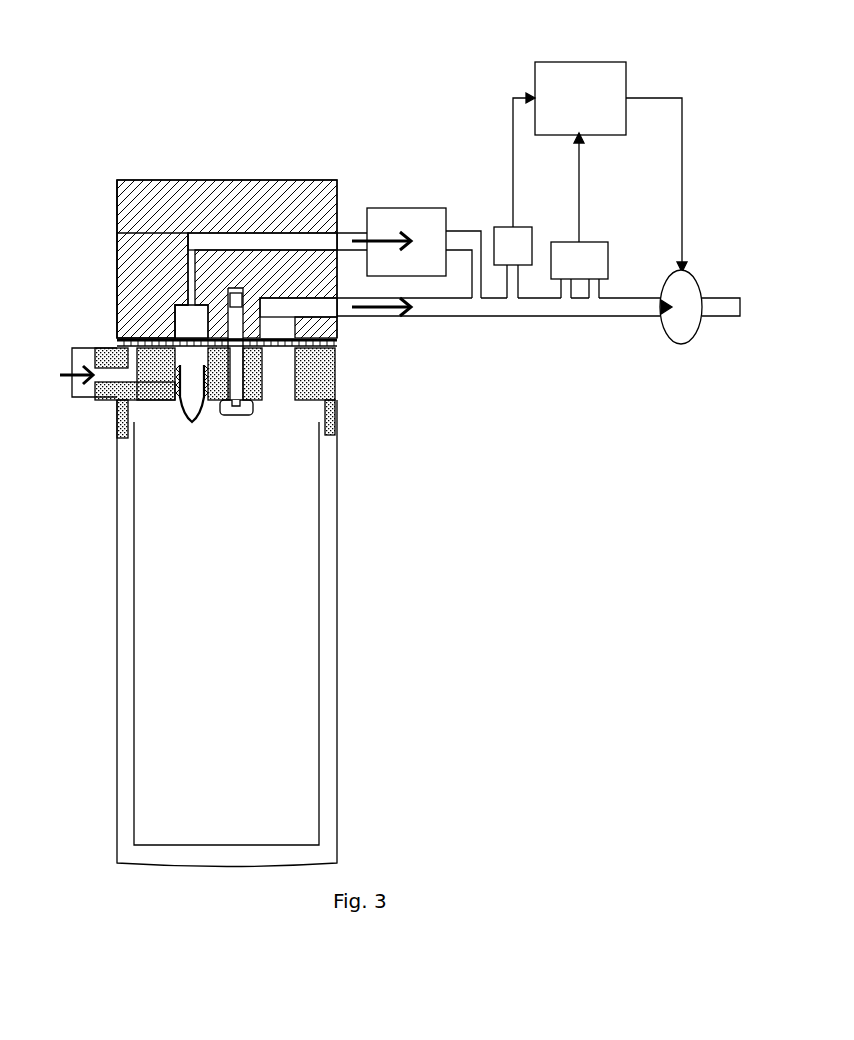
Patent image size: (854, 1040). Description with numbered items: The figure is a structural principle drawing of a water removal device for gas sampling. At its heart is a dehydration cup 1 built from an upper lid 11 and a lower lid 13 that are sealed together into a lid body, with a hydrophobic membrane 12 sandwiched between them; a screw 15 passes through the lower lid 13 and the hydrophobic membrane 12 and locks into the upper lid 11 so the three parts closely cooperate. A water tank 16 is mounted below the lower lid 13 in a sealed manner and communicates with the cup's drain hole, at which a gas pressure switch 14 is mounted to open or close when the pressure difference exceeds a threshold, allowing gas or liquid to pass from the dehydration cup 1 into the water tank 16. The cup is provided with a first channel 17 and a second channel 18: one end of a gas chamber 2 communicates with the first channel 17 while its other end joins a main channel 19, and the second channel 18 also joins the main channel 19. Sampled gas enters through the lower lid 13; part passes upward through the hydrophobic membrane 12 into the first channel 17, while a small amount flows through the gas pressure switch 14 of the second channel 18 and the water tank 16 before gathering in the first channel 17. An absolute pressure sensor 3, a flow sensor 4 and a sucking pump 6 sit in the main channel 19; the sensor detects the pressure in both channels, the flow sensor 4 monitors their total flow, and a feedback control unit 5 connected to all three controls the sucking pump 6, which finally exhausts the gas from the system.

The dehydration cup 1 is at (203, 285).
The gas chamber 2 is at (412, 228).
The absolute pressure sensor 3 is at (513, 247).
The flow sensor 4 is at (580, 262).
The feedback control unit 5 is at (607, 98).
The sucking pump 6 is at (687, 297).
The upper lid 11 is at (142, 280).
The hydrophobic membrane 12 is at (190, 338).
The lower lid 13 is at (157, 377).
The gas pressure switch 14 is at (175, 390).
The screw 15 is at (233, 405).
The water tank 16 is at (125, 660).
The first channel 17 is at (273, 240).
The second channel 18 is at (327, 305).
The main channel 19 is at (567, 305).